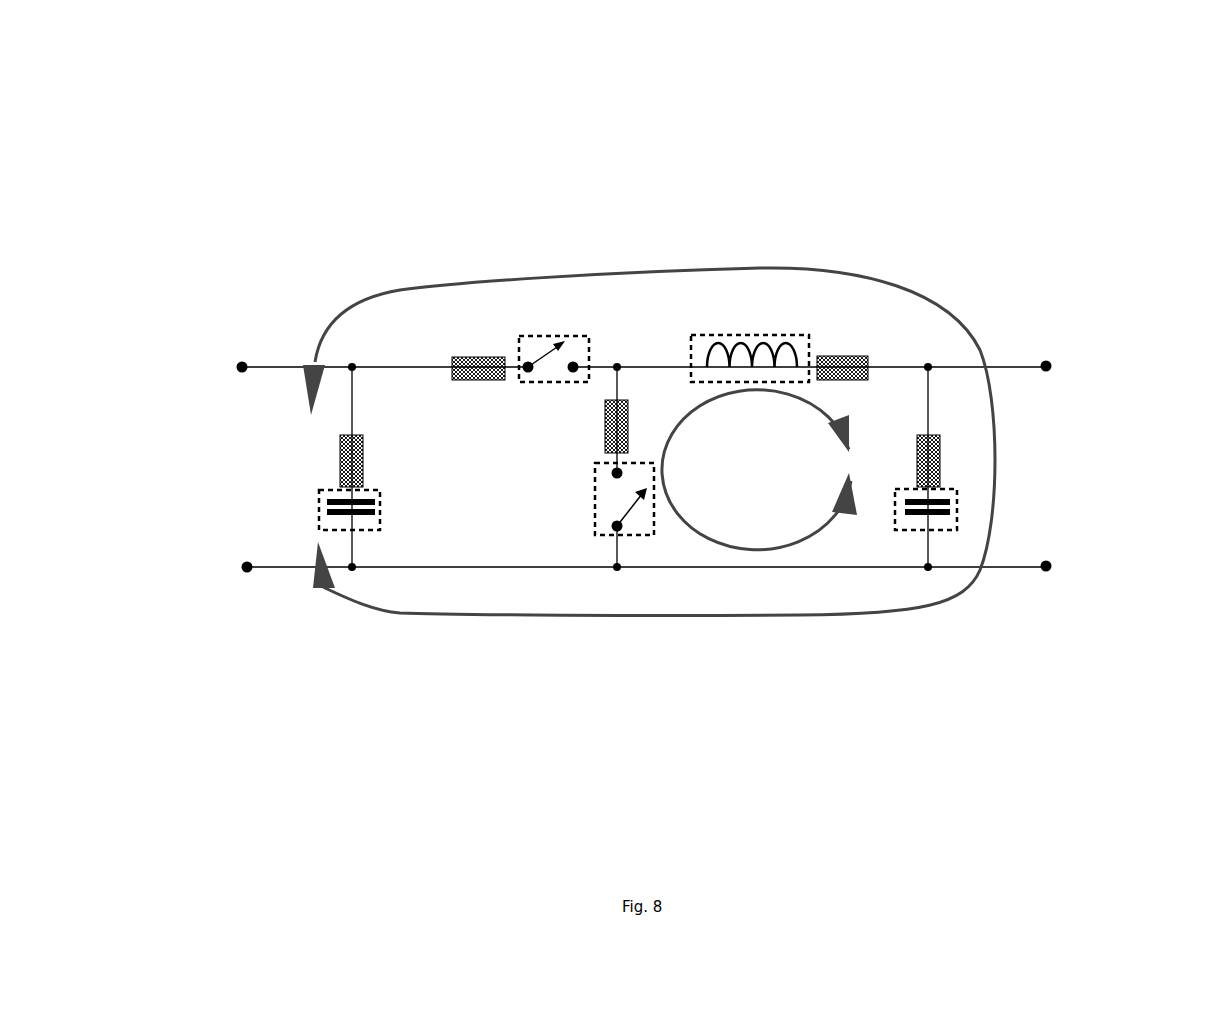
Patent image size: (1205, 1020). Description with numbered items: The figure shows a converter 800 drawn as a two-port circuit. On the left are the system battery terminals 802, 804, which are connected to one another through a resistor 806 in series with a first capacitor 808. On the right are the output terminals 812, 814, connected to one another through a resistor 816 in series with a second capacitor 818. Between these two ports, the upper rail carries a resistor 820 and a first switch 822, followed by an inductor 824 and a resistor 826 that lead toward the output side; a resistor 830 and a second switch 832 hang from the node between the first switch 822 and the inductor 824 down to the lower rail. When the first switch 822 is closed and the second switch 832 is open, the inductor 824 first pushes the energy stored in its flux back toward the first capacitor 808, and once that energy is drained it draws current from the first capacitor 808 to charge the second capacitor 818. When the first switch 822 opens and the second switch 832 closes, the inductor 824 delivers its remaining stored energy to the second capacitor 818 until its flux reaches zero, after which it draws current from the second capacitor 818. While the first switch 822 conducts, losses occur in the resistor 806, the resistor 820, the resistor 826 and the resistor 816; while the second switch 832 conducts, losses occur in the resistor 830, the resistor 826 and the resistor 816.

The converter 800 is at (123, 112).
The system battery terminal 802 is at (280, 366).
The system battery terminal 804 is at (275, 566).
The resistor 806 is at (364, 466).
The first capacitor 808 is at (380, 512).
The output terminal 812 is at (1033, 366).
The output terminal 814 is at (1030, 567).
The resistor 816 is at (941, 466).
The second capacitor 818 is at (957, 512).
The resistor 820 is at (480, 382).
The first switch 822 is at (566, 383).
The inductor 824 is at (722, 336).
The resistor 826 is at (852, 357).
The resistor 830 is at (629, 425).
The second switch 832 is at (600, 536).